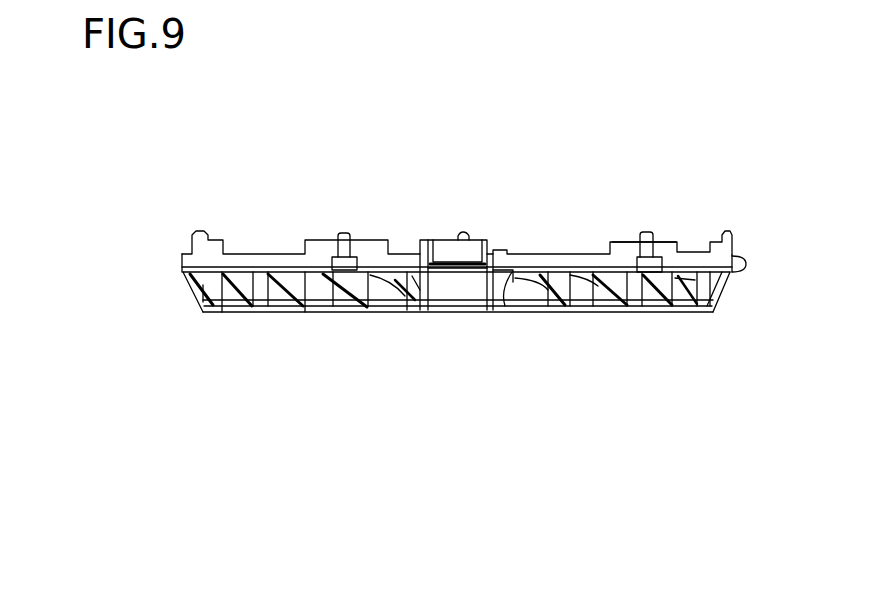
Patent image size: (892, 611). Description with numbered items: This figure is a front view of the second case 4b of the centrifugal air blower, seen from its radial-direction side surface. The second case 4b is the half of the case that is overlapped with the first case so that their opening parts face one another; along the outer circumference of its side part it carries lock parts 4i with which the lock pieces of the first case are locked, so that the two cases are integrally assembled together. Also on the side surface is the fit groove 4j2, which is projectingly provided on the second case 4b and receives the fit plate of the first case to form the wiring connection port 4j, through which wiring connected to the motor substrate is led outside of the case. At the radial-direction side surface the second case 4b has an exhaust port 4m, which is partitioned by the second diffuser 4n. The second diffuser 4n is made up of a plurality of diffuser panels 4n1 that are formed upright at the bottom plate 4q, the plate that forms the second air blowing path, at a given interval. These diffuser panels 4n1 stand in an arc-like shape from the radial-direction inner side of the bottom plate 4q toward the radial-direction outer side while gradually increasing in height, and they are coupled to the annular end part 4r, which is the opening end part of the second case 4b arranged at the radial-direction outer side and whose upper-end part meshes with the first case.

The second case 4b is at (182, 263).
The annular end part 4r is at (556, 253).
The lock part 4i is at (337, 311).
The wiring connection port 4j is at (474, 256).
The fit groove 4j2 is at (440, 268).
The diffuser panels 4n1 is at (236, 312).
The second diffuser 4n is at (293, 312).
The bottom plate 4q is at (550, 308).
The exhaust port 4m is at (639, 297).